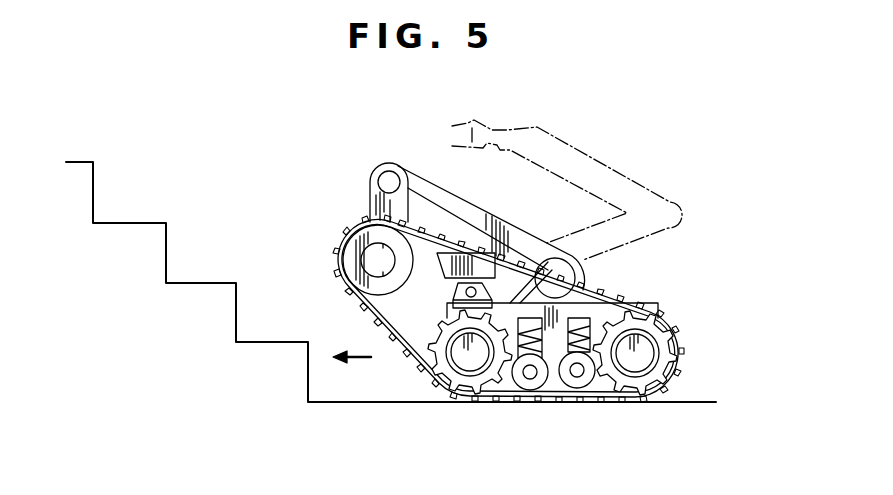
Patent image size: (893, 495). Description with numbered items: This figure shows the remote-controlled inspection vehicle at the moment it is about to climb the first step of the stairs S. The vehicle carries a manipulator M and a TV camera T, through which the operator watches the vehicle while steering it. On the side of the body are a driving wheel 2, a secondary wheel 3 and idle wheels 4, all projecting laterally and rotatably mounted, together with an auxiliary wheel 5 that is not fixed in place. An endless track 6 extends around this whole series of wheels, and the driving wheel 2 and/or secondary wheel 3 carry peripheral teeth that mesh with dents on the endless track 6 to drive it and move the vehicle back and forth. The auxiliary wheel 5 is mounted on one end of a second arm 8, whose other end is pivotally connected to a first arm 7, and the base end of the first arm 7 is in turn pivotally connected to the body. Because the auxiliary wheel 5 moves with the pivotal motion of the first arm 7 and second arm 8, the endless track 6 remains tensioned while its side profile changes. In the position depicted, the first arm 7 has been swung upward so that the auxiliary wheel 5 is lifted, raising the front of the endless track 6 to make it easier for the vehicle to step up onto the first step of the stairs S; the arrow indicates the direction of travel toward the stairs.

The driving wheel 2 is at (431, 381).
The secondary wheel 3 is at (673, 333).
The idle wheels 4 is at (532, 392).
The auxiliary wheel 5 is at (348, 228).
The endless track 6 is at (603, 290).
The first arm 7 is at (482, 208).
The second arm 8 is at (368, 186).
The TV camera T is at (441, 272).
The stairs S is at (289, 342).
The manipulator M is at (610, 165).